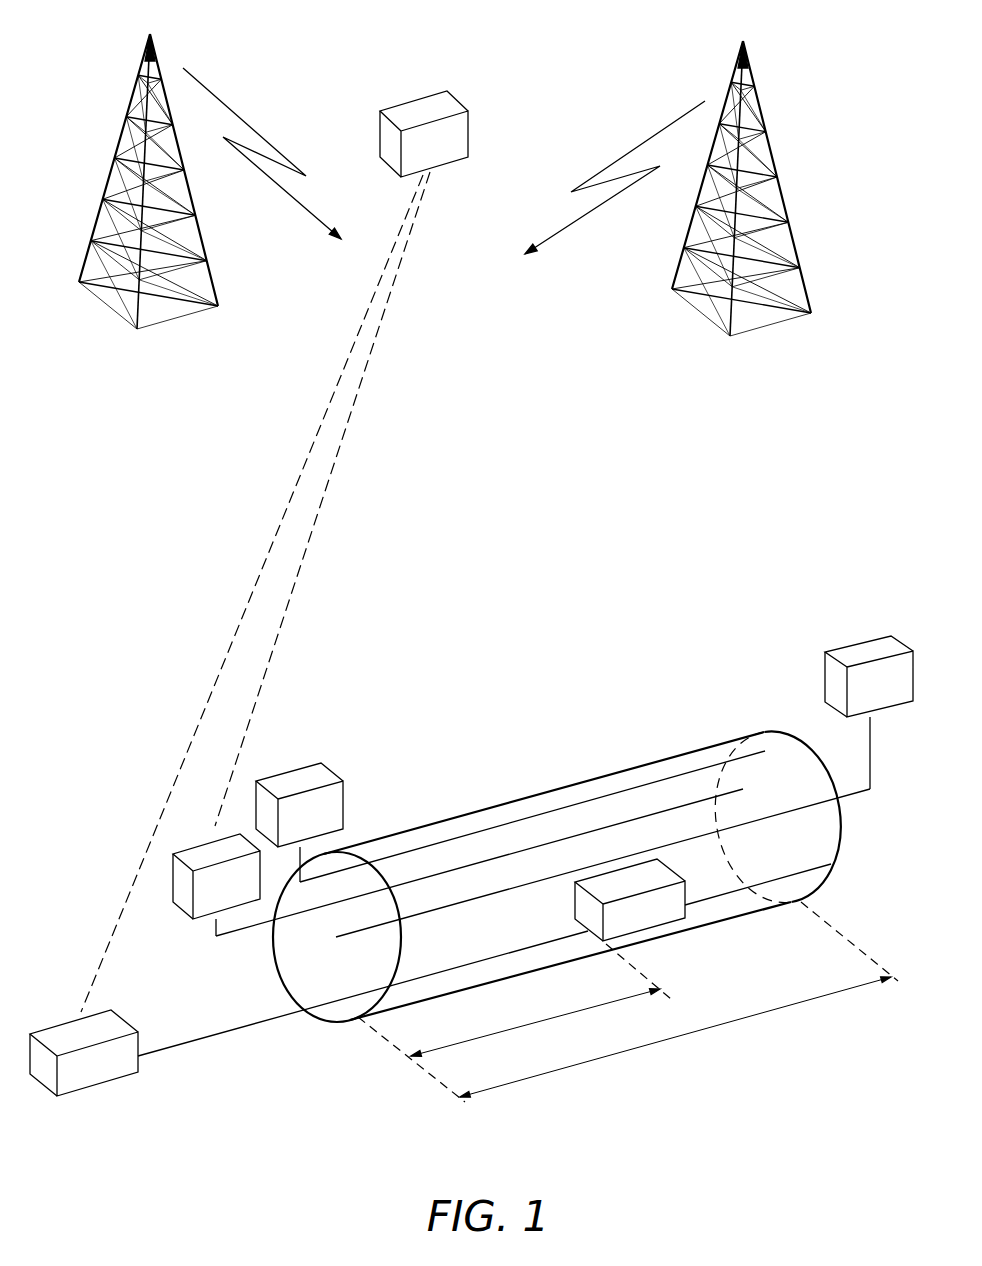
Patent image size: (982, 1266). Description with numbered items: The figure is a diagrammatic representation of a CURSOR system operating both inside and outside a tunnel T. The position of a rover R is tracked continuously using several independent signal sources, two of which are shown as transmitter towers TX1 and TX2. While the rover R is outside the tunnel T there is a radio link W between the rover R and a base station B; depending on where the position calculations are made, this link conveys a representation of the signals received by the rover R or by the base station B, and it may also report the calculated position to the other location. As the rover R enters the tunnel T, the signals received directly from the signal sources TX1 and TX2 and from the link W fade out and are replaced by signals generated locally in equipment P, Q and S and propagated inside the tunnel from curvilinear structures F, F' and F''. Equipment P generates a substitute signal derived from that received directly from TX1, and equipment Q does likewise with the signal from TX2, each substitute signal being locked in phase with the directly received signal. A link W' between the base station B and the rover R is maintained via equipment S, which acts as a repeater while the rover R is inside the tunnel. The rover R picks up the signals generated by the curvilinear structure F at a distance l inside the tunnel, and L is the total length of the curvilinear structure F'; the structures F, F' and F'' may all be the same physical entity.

The signal source TX1 is at (128, 103).
The signal source TX2 is at (765, 109).
The base station B is at (409, 111).
The radio link W is at (252, 593).
The link W' is at (322, 499).
The equipment Q is at (845, 649).
The equipment S is at (330, 778).
The tunnel T is at (700, 749).
The curvilinear structure F is at (479, 837).
The curvilinear structure F' is at (603, 835).
The curvilinear structure F'' is at (532, 816).
The equipment P is at (192, 912).
The rover R is at (672, 921).
The distance l is at (535, 1023).
The total length L is at (628, 1002).